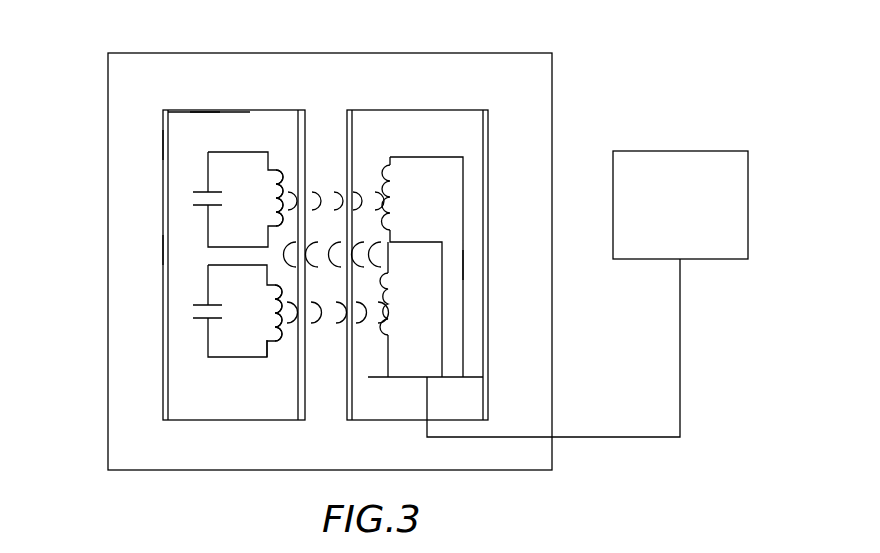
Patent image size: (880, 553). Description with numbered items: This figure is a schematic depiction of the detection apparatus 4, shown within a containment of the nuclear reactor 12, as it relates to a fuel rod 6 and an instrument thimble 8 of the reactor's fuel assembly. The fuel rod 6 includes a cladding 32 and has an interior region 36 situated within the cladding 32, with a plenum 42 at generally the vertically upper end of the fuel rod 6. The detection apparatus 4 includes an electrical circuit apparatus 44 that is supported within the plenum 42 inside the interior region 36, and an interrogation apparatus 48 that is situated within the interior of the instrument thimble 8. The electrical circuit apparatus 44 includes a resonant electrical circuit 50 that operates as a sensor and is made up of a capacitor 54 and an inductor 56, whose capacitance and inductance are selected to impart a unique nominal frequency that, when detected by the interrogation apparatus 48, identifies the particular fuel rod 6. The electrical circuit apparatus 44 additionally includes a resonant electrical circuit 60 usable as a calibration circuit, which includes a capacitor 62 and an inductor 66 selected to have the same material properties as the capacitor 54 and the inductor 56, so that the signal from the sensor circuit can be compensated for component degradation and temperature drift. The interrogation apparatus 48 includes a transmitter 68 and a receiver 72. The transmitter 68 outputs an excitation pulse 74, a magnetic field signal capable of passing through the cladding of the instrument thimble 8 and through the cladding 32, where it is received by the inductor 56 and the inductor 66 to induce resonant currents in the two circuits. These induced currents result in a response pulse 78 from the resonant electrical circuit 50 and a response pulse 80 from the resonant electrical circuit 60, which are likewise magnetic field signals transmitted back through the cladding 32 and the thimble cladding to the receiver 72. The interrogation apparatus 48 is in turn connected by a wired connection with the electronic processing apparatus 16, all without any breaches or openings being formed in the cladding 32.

The detection apparatus 4 is at (327, 85).
The fuel rod 6 is at (160, 124).
The instrument thimble 8 is at (493, 130).
The nuclear reactor 12 is at (555, 102).
The electronic processing apparatus 16 is at (667, 150).
The cladding 32 is at (163, 142).
The interior region 36 is at (188, 124).
The plenum 42 is at (205, 128).
The electrical circuit apparatus 44 is at (178, 249).
The interrogation apparatus 48 is at (476, 248).
The resonant electrical circuit 50 is at (238, 163).
The capacitor 54 is at (196, 191).
The inductor 56 is at (282, 196).
The resonant electrical circuit 60 is at (200, 335).
The capacitor 62 is at (196, 304).
The inductor 66 is at (283, 346).
The transmitter 68 is at (387, 345).
The receiver 72 is at (446, 242).
The excitation pulse 74 is at (282, 295).
The response pulse 78 is at (380, 176).
The response pulse 80 is at (337, 324).